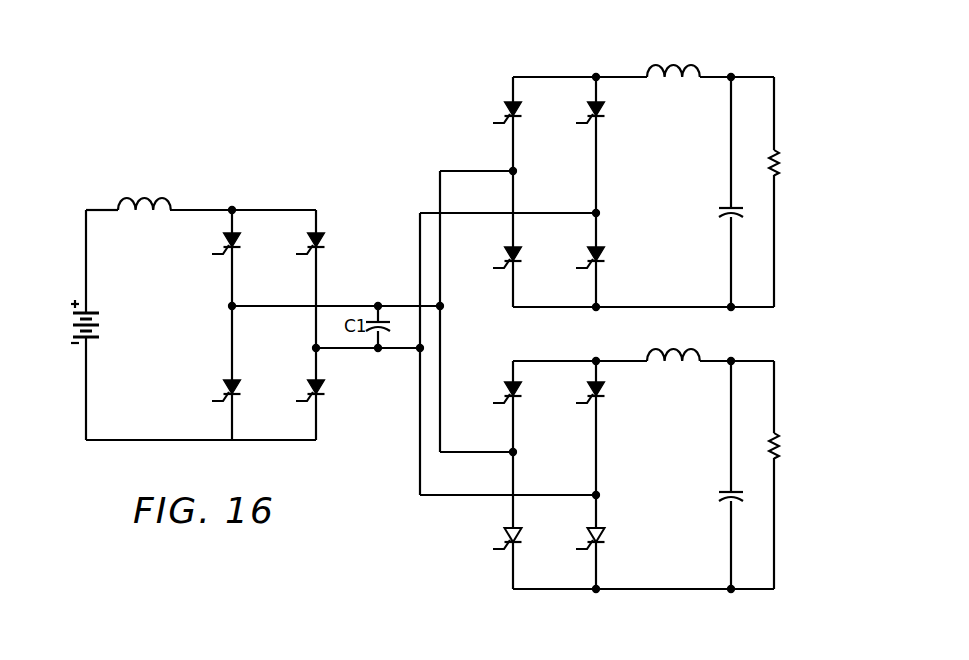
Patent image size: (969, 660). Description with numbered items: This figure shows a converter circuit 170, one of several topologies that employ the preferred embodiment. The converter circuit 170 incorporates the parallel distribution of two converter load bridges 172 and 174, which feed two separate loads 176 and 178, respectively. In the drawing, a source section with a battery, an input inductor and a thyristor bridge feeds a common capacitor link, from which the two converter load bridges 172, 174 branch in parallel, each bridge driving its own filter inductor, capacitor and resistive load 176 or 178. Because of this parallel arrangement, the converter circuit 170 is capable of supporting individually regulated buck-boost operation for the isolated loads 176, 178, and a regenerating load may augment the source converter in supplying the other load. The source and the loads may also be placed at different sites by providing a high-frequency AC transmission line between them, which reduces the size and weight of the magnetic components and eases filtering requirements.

The converter circuit 170 is at (69, 212).
The converter load bridge 172 is at (560, 64).
The converter load bridge 174 is at (444, 572).
The load 176 is at (798, 114).
The load 178 is at (799, 397).